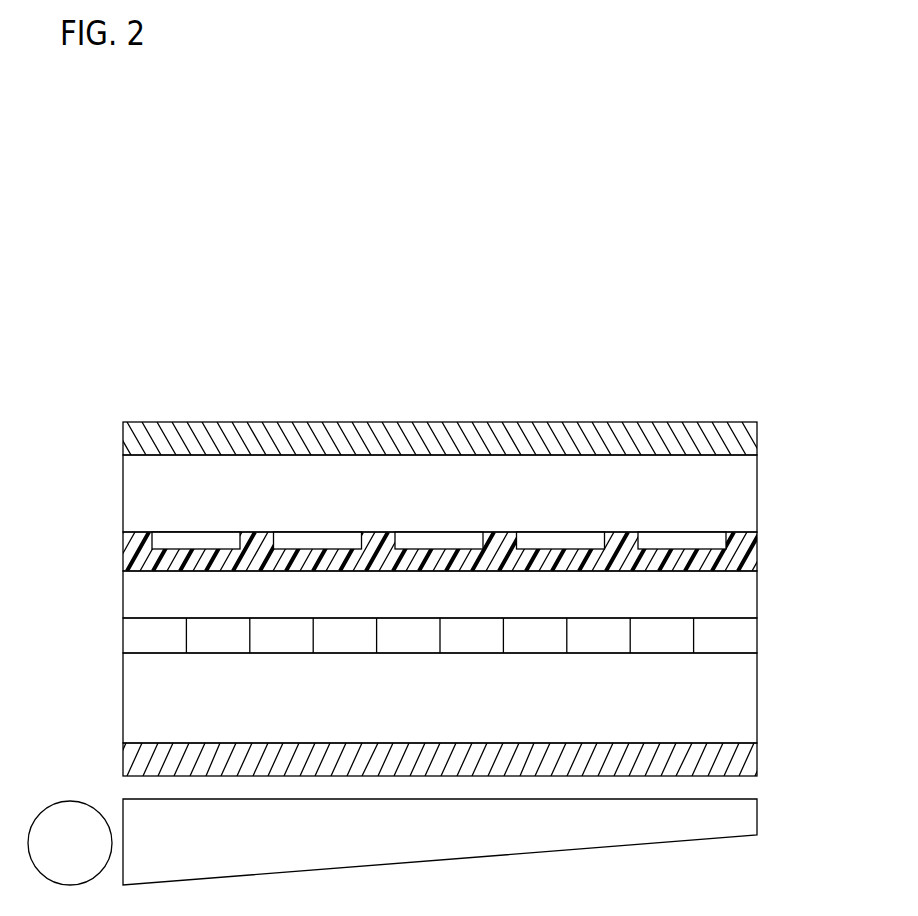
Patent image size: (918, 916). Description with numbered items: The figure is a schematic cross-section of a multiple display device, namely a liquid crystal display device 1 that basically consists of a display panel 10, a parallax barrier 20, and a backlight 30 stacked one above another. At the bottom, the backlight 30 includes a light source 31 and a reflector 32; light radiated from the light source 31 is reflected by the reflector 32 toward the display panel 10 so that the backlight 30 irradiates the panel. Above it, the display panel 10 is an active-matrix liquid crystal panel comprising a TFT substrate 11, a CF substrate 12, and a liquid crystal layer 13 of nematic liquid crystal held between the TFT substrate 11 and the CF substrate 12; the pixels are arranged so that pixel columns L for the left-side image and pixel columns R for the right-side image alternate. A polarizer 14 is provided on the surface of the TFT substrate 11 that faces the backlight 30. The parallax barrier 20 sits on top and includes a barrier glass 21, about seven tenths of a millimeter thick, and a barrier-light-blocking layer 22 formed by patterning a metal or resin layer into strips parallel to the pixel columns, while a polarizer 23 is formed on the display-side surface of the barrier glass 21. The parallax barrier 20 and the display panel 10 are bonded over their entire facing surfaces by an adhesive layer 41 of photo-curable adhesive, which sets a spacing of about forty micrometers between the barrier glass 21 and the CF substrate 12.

The liquid crystal display device 1 is at (747, 277).
The display panel 10 is at (828, 572).
The TFT substrate 11 is at (757, 692).
The CF substrate 12 is at (757, 585).
The liquid crystal layer 13 is at (757, 634).
The polarizer 14 is at (757, 758).
The parallax barrier 20 is at (828, 452).
The barrier glass 21 is at (757, 494).
The barrier-light-blocking layer 22 is at (688, 543).
The polarizer 23 is at (757, 437).
The backlight 30 is at (828, 797).
The light source 31 is at (71, 811).
The reflector 32 is at (757, 817).
The adhesive layer 41 is at (757, 556).